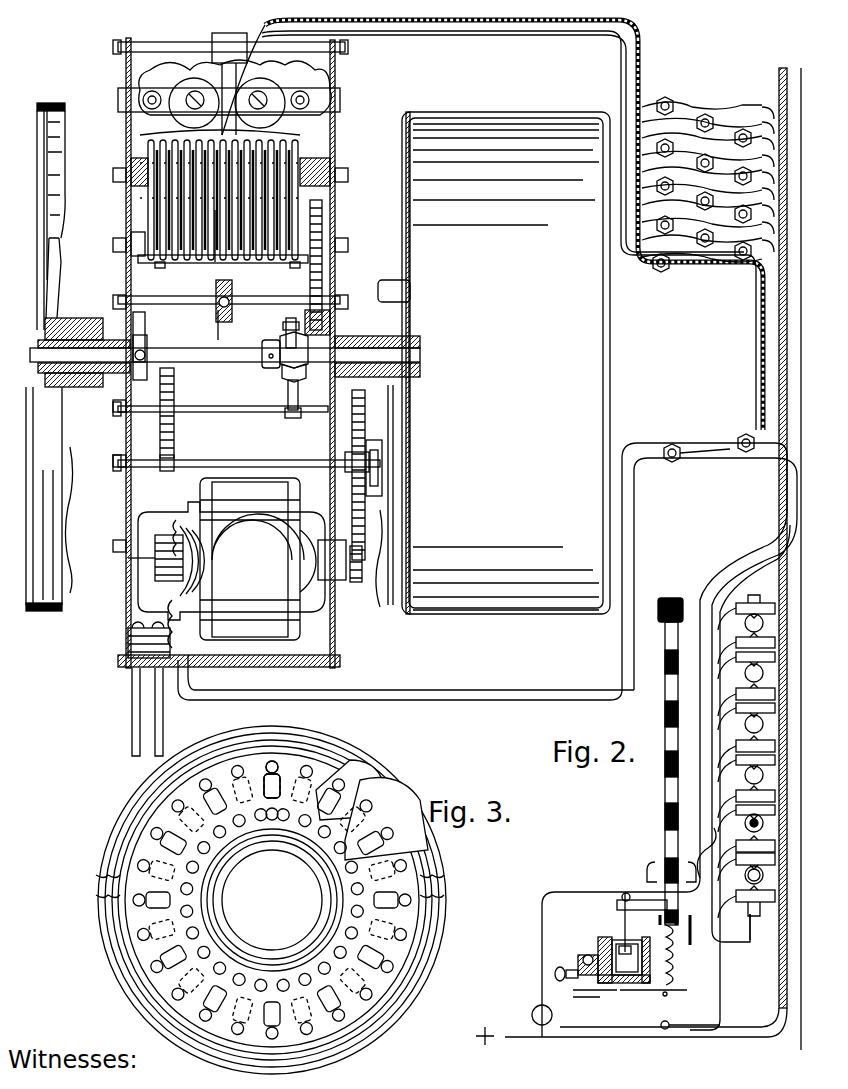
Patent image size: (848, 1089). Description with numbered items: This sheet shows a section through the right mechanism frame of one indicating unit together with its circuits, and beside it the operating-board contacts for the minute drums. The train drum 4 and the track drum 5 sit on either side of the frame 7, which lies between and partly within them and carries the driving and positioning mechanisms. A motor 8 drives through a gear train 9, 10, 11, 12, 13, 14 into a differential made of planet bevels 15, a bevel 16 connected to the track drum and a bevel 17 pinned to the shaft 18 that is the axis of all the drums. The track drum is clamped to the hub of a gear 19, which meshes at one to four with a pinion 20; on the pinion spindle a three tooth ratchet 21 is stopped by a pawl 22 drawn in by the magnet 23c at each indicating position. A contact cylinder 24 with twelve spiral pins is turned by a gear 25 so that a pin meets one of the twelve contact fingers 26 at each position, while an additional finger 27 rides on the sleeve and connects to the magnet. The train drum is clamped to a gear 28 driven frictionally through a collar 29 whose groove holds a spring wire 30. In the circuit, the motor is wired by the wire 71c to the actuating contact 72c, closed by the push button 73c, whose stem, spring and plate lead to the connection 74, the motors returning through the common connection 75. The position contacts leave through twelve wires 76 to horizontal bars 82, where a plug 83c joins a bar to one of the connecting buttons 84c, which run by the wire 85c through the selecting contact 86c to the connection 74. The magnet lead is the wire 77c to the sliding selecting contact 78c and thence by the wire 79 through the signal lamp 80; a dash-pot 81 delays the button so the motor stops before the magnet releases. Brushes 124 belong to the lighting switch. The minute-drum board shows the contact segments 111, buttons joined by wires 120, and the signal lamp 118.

In FIG. 2, the train drum 4 is at (50, 611).
In FIG. 2, the track drum 5 is at (545, 614).
In FIG. 2, the frame 7 is at (325, 632).
In FIG. 2, the motor 8 is at (300, 596).
In FIG. 2, the gear 9 is at (360, 582).
In FIG. 2, the gear 10 is at (366, 448).
In FIG. 2, the gear 11 is at (160, 470).
In FIG. 2, the gear 12 is at (174, 430).
In FIG. 2, the gear 13 is at (285, 414).
In FIG. 2, the gear 14 is at (286, 322).
In FIG. 2, the planet bevels 15 is at (286, 380).
In FIG. 2, the bevel 16 is at (299, 410).
In FIG. 2, the bevel 17 is at (272, 370).
In FIG. 2, the shaft 18 is at (246, 348).
In FIG. 2, the gear 19 is at (328, 322).
In FIG. 2, the pinion 20 is at (305, 296).
In FIG. 2, the three tooth ratchet 21 is at (216, 288).
In FIG. 2, the pawl 22 is at (230, 262).
In FIG. 2, the magnet 23c is at (235, 80).
In FIG. 2, the contact cylinder 24 is at (215, 262).
In FIG. 2, the gear 25 is at (322, 228).
In FIG. 2, the contact fingers 26 is at (162, 262).
In FIG. 2, the additional finger 27 is at (150, 262).
In FIG. 2, the gear 28 is at (170, 312).
In FIG. 2, the collar 29 is at (150, 338).
In FIG. 2, the spring wire 30 is at (145, 322).
In FIG. 2, the common connection 75 is at (800, 380).
In FIG. 2, the wires 76 is at (775, 90).
In FIG. 2, the wire 71c is at (690, 443).
In FIG. 2, the wire 77c is at (762, 500).
In FIG. 2, the push button 73c is at (672, 598).
In FIG. 2, the horizontal bars 82 is at (765, 600).
In FIG. 2, the plug 83c is at (746, 822).
In FIG. 2, the connecting buttons 84c is at (746, 874).
In FIG. 2, the indicator selecting contact 78c is at (700, 856).
In FIG. 2, the wire 79 is at (542, 925).
In FIG. 2, the dash-pot 81 is at (610, 940).
In FIG. 2, the indicator selecting contact 86c is at (688, 950).
In FIG. 2, the wire 85c is at (752, 945).
In FIG. 2, the connection 74 is at (625, 992).
In FIG. 2, the signal lamp 80 is at (532, 1014).
In FIG. 2, the actuating contact 72c is at (668, 1022).
In FIG. 2, the brushes 124 is at (132, 736).
In FIG. 3, the wires 120 is at (437, 875).
In FIG. 3, the contact segments 111 is at (272, 861).
In FIG. 3, the signal lamp 118 is at (338, 784).